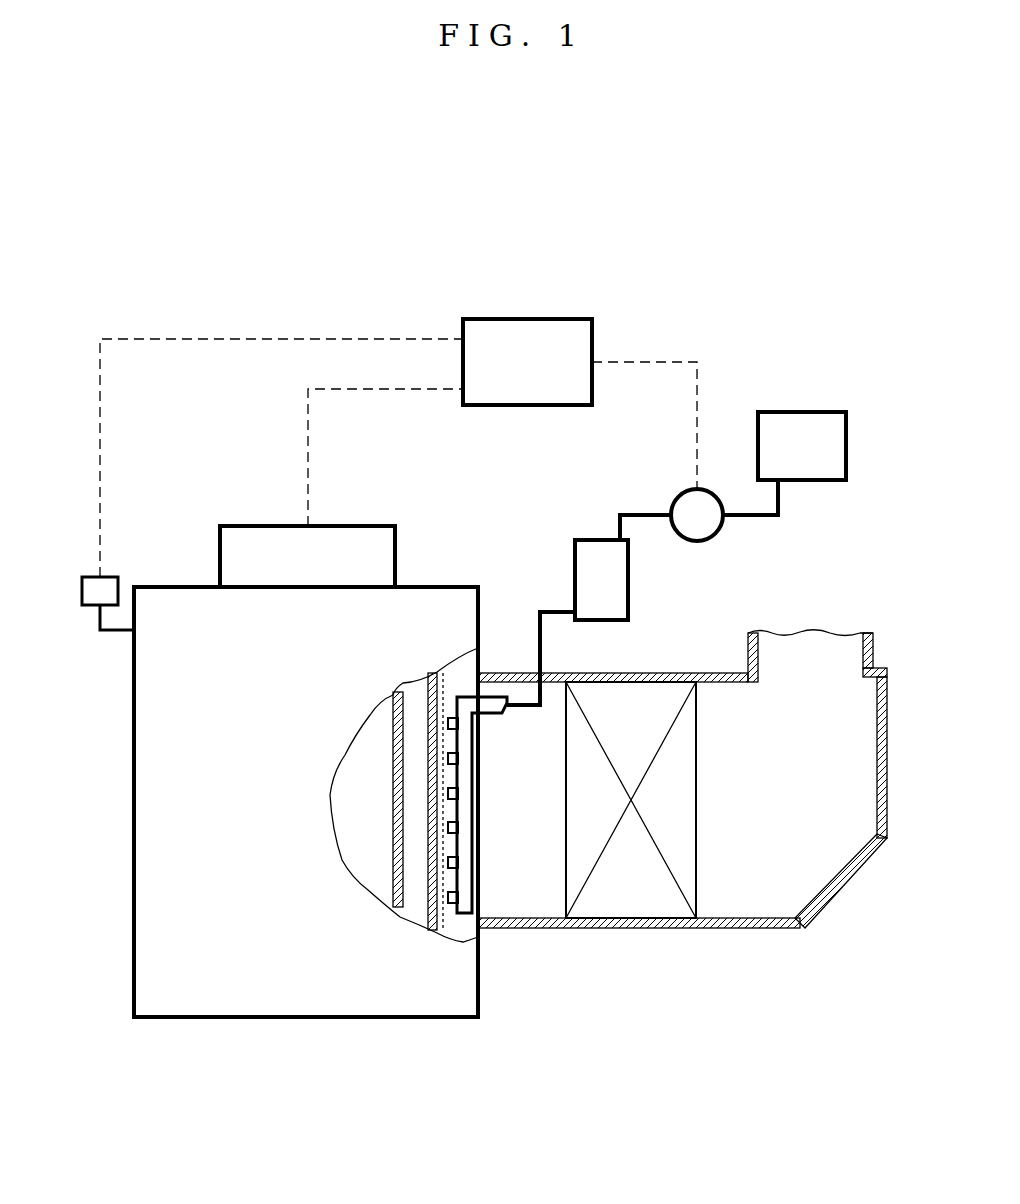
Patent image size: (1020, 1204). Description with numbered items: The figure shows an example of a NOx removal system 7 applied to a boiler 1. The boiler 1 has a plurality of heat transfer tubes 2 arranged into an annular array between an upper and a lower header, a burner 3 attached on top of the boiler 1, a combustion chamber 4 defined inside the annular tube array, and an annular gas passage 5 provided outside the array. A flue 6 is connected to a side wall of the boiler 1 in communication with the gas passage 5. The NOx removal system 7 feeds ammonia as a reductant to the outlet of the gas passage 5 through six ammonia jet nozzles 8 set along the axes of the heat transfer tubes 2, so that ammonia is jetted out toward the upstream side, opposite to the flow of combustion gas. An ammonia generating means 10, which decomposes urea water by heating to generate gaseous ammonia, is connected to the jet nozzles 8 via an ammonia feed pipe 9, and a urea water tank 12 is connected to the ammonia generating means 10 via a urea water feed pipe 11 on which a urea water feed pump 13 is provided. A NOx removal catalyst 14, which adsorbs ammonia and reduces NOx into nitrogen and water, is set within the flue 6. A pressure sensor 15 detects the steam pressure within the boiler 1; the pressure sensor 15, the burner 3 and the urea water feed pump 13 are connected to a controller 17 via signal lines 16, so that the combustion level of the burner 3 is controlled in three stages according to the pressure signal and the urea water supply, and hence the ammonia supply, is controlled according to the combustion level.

The boiler 1 is at (297, 1022).
The heat transfer tubes 2 is at (392, 742).
The burner 3 is at (342, 526).
The combustion chamber 4 is at (363, 803).
The gas passage 5 is at (461, 676).
The flue 6 is at (780, 877).
The NOx removal system 7 is at (727, 367).
The ammonia jet nozzles 8 is at (453, 905).
The ammonia feed pipe 9 is at (540, 647).
The ammonia generating means 10 is at (575, 557).
The urea water feed pipe 11 is at (757, 517).
The urea water tank 12 is at (807, 412).
The urea water feed pump 13 is at (684, 492).
The NOx removal catalyst 14 is at (697, 888).
The pressure sensor 15 is at (95, 577).
The signal lines 16 is at (258, 337).
The controller 17 is at (527, 318).